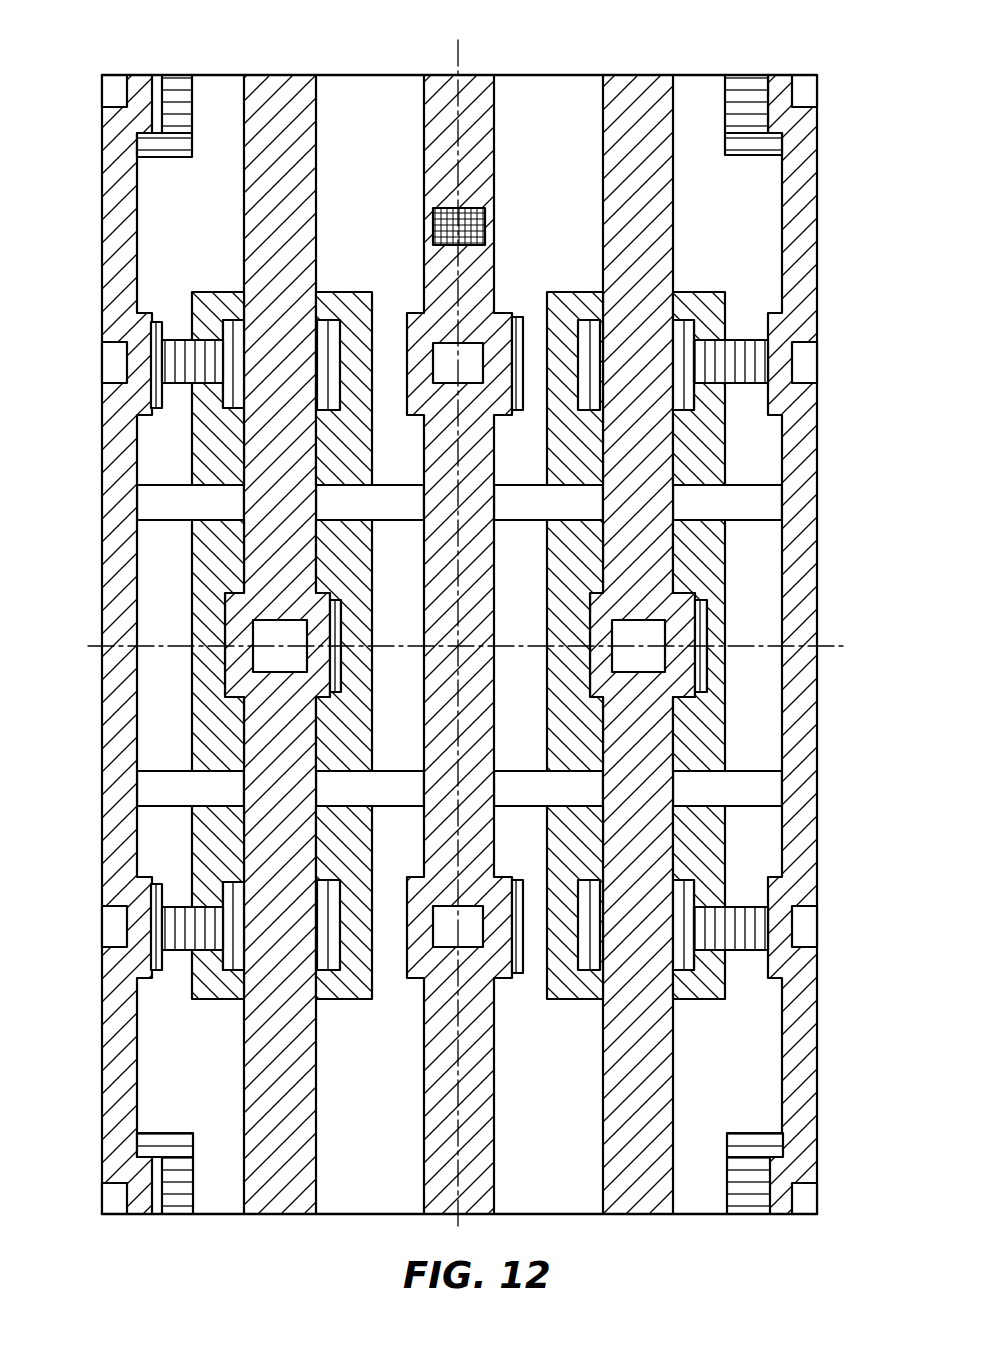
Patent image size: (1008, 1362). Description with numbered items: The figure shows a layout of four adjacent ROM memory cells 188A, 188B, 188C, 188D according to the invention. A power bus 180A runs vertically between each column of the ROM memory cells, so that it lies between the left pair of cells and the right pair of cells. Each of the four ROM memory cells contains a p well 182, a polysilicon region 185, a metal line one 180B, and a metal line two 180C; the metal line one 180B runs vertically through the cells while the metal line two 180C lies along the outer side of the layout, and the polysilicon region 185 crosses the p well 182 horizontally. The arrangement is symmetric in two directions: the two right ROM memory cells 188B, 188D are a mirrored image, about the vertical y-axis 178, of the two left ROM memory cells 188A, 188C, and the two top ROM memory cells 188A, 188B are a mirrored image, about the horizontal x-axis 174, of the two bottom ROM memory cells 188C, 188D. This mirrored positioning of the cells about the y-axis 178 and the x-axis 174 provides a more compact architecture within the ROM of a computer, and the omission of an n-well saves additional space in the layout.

The x-axis 174 is at (838, 645).
The y-axis 178 is at (458, 58).
The power bus 180A is at (440, 80).
The metal line one 180B is at (643, 86).
The metal line two 180C is at (808, 222).
The p well 182 is at (596, 453).
The polysilicon region 185 is at (570, 515).
The ROM memory cell 188A is at (172, 62).
The ROM memory cell 188B is at (786, 60).
The ROM memory cell 188C is at (97, 1124).
The ROM memory cell 188D is at (832, 1131).